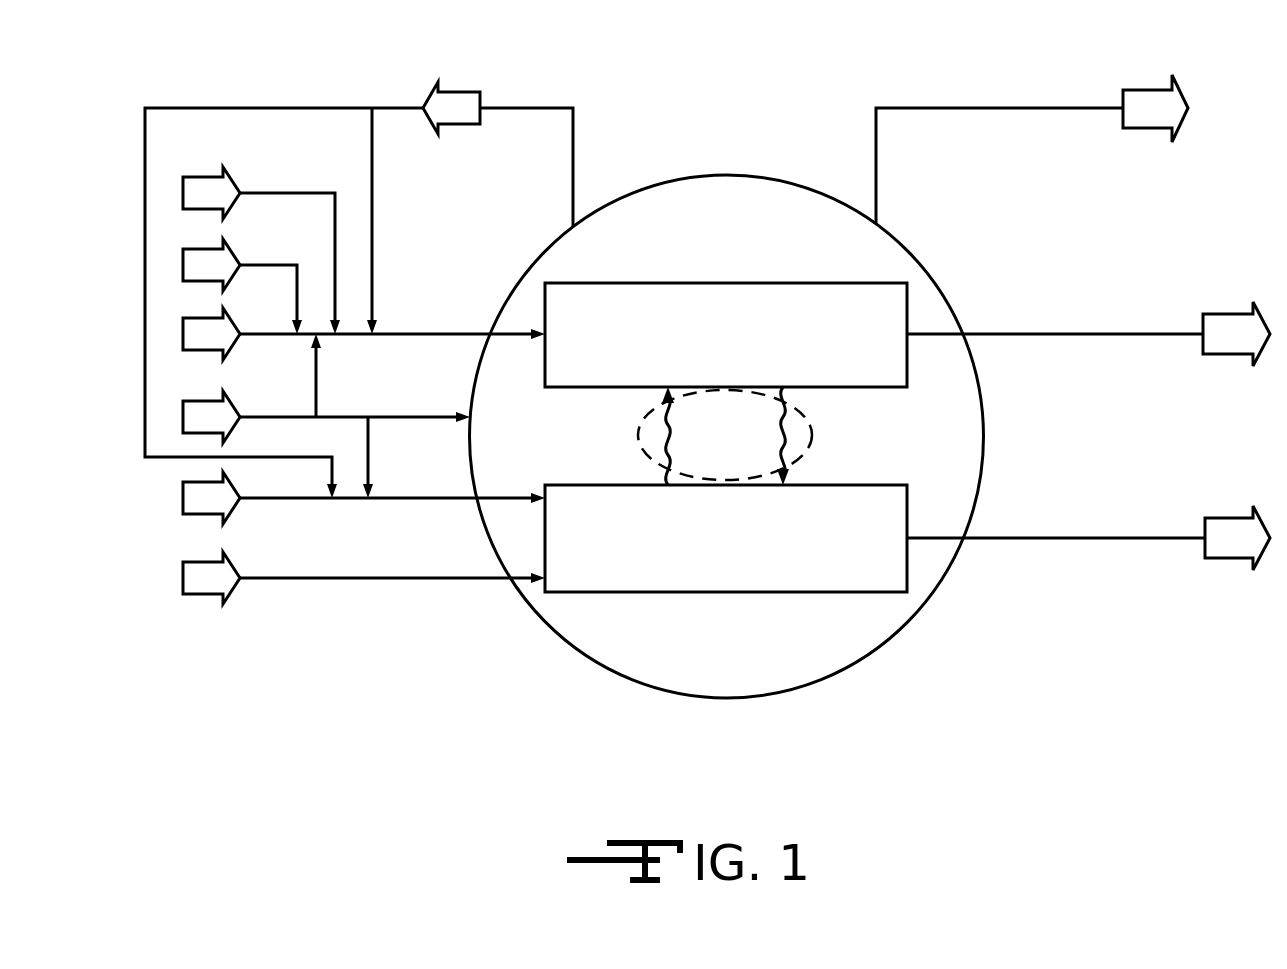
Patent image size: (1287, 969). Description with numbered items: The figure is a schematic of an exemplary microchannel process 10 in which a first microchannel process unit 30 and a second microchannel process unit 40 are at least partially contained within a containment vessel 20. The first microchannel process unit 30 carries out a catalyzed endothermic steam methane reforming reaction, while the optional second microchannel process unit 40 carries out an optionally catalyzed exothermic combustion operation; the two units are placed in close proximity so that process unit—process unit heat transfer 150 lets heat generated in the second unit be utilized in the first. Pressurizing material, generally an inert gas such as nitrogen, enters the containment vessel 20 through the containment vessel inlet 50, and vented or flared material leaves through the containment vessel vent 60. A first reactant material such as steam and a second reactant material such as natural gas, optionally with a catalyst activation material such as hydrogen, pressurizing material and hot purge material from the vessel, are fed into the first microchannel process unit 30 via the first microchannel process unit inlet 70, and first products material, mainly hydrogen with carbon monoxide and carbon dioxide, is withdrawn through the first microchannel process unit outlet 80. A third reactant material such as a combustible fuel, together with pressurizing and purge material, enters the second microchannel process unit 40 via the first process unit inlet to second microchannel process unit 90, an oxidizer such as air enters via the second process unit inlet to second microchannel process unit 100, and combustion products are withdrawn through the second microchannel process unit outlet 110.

The microchannel process 10 is at (652, 68).
The containment vessel 20 is at (762, 172).
The first microchannel process unit 30 is at (716, 280).
The second microchannel process unit 40 is at (735, 597).
The containment vessel inlet 50 is at (385, 416).
The containment vessel vent 60 is at (977, 108).
The first microchannel process unit inlet 70 is at (418, 333).
The first microchannel process unit outlet 80 is at (1058, 333).
The first process unit inlet to second microchannel process unit 90 is at (447, 500).
The second process unit inlet to second microchannel process unit 100 is at (470, 580).
The second microchannel process unit outlet 110 is at (1085, 538).
The process unit—process unit heat transfer 150 is at (814, 433).